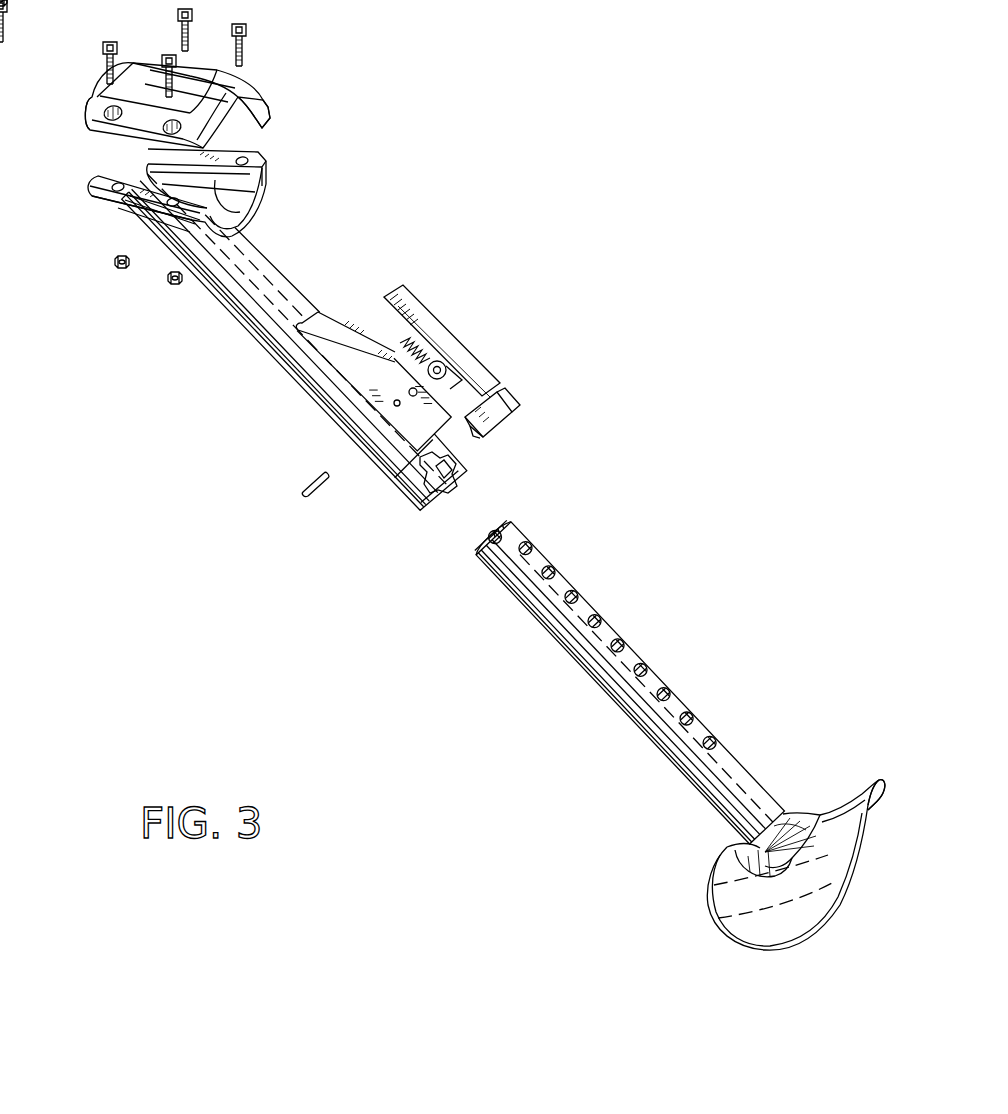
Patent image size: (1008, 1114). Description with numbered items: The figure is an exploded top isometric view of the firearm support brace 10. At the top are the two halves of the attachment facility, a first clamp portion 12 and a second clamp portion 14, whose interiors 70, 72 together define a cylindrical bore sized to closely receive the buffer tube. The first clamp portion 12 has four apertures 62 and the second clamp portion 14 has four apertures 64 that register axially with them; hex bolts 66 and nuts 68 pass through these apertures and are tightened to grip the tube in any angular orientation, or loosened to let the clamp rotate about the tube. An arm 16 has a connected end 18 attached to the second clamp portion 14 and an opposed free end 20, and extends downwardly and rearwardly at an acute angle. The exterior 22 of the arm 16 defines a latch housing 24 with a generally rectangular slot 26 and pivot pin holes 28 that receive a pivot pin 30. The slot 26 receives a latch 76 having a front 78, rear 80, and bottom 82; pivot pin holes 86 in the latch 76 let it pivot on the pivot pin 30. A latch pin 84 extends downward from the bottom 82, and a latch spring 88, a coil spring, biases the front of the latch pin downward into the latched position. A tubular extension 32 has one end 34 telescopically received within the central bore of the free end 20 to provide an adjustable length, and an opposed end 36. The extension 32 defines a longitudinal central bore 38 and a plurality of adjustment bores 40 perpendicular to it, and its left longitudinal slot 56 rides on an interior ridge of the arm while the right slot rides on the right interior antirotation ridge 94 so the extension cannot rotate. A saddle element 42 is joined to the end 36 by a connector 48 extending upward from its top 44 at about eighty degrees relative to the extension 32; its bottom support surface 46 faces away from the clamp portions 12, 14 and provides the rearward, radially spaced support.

The firearm support brace 10 is at (636, 307).
The first clamp portion 12 is at (143, 66).
The second clamp portion 14 is at (262, 163).
The arm 16 is at (258, 355).
The connected end 18 is at (173, 227).
The free end 20 is at (435, 503).
The exterior 22 is at (255, 322).
The latch housing 24 is at (353, 365).
The slot 26 is at (362, 334).
The pivot pin holes 28 is at (397, 406).
The pivot pin 30 is at (301, 483).
The tubular extension 32 is at (623, 718).
The end of extension 34 is at (478, 550).
The opposed end of extension 36 is at (757, 860).
The longitudinal central bore 38 is at (494, 528).
The adjustment bores 40 is at (573, 597).
The saddle element 42 is at (706, 887).
The top 44 is at (738, 923).
The bottom support surface 46 is at (860, 833).
The connector 48 is at (802, 826).
The left longitudinal slot 56 is at (548, 623).
The apertures 62 is at (97, 97).
The apertures 64 is at (113, 207).
The hex bolts 66 is at (247, 48).
The nuts 68 is at (120, 270).
The interior of first clamp portion 70 is at (243, 125).
The interior of second clamp portion 72 is at (228, 206).
The latch 76 is at (452, 330).
The front of latch 78 is at (505, 420).
The rear of latch 80 is at (392, 293).
The bottom of latch 82 is at (480, 432).
The latch pin 84 is at (476, 437).
The pivot pin holes 86 is at (434, 374).
The latch spring 88 is at (420, 357).
The right interior antirotation ridge 94 is at (438, 481).